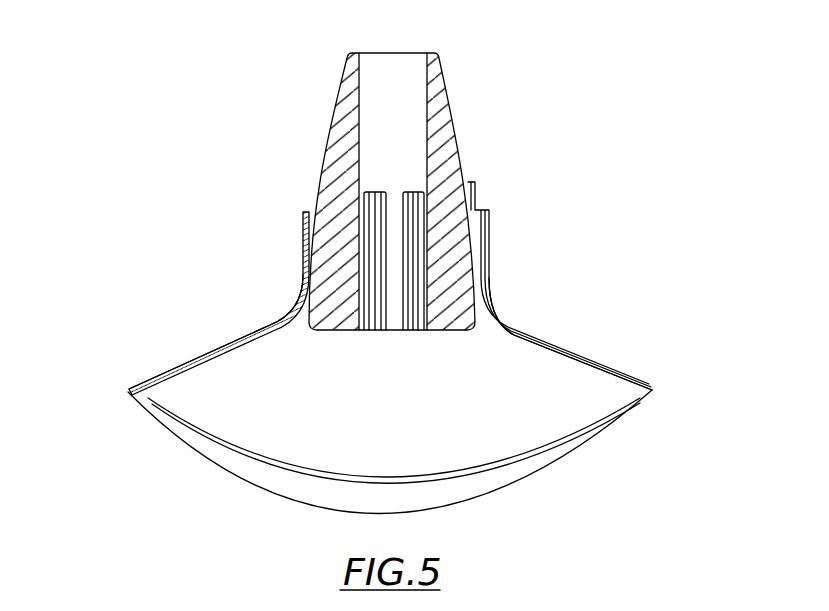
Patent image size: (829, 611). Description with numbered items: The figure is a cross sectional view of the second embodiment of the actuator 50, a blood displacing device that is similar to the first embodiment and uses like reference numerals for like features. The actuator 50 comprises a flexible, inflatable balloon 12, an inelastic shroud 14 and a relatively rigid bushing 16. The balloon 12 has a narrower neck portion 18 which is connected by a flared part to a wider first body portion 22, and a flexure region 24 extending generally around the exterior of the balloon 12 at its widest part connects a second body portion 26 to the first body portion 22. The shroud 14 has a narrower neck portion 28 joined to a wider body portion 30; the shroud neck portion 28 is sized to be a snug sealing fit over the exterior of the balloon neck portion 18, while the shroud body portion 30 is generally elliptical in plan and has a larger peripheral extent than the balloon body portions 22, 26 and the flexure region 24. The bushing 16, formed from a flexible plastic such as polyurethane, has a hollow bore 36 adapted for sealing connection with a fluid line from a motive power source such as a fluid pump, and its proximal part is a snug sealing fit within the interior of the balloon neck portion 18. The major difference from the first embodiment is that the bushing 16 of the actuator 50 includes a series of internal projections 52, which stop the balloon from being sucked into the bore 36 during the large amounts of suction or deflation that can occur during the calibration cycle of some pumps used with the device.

The actuator 50 is at (384, 262).
The balloon 12 is at (397, 226).
The shroud 14 is at (384, 394).
The bushing 16 is at (466, 226).
The neck portion 18 is at (487, 248).
The first body portion 22 is at (542, 348).
The flexure region 24 is at (613, 397).
The second body portion 26 is at (443, 475).
The neck portion 28 is at (300, 253).
The body portion 30 is at (180, 362).
The hollow bore 36 is at (383, 62).
The internal projections 52 is at (408, 333).